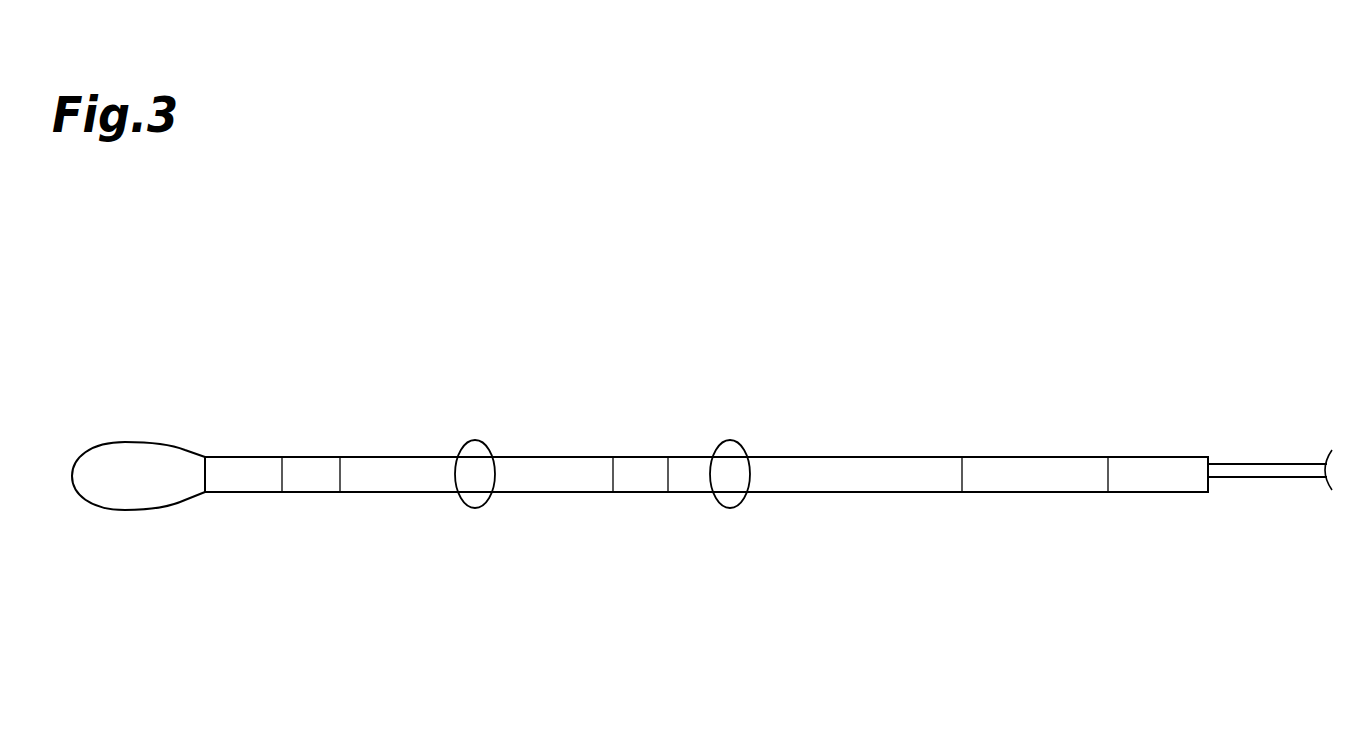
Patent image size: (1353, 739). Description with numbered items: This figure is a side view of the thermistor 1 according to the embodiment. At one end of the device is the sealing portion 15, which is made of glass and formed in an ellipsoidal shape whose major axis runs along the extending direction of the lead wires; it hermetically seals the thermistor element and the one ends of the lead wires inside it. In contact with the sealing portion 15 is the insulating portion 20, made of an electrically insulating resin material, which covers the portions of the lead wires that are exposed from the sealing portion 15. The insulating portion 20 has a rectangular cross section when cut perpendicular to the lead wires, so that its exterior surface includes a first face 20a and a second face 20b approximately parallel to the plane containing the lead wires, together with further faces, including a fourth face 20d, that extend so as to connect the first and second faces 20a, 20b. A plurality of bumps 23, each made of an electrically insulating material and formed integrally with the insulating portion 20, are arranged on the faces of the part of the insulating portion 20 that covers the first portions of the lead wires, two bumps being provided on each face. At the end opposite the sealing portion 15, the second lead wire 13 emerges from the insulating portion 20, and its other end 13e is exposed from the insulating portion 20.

The thermistor 1 is at (1035, 248).
The second lead wire 13 is at (1257, 494).
The other end of the second lead wire 13e is at (1284, 464).
The sealing portion 15 is at (155, 510).
The insulating portion 20 is at (817, 442).
The first face 20a is at (402, 456).
The second face 20b is at (885, 492).
The fourth face 20d is at (563, 478).
The bumps 23 is at (487, 440).